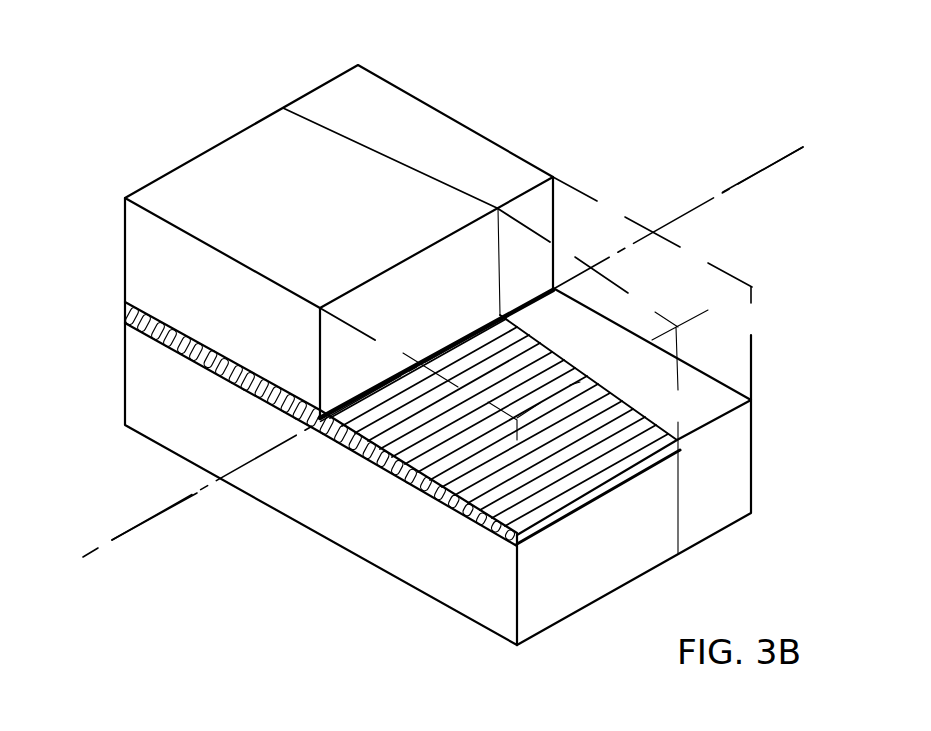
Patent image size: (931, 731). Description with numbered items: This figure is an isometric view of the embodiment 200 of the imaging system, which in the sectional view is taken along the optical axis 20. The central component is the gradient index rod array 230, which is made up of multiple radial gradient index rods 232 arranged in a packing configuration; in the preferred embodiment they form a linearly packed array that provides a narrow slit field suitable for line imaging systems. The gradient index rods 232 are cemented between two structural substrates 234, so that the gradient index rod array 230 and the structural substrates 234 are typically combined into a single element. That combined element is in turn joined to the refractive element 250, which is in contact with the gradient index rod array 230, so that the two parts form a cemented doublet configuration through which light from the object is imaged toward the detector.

The embodiment of the invention 200 is at (148, 48).
The refractive element 250 is at (330, 97).
The structural substrates 234 is at (216, 164).
The radial gradient index rods 232 is at (172, 338).
The gradient index rod array 230 is at (618, 478).
The optical axis 20 is at (800, 146).